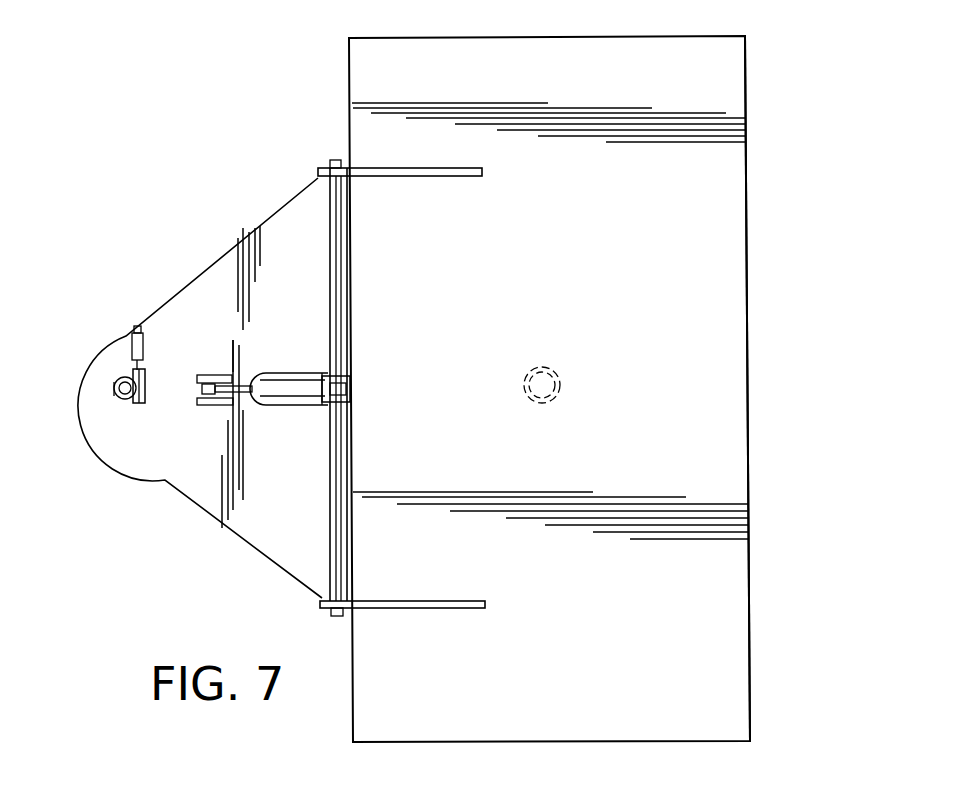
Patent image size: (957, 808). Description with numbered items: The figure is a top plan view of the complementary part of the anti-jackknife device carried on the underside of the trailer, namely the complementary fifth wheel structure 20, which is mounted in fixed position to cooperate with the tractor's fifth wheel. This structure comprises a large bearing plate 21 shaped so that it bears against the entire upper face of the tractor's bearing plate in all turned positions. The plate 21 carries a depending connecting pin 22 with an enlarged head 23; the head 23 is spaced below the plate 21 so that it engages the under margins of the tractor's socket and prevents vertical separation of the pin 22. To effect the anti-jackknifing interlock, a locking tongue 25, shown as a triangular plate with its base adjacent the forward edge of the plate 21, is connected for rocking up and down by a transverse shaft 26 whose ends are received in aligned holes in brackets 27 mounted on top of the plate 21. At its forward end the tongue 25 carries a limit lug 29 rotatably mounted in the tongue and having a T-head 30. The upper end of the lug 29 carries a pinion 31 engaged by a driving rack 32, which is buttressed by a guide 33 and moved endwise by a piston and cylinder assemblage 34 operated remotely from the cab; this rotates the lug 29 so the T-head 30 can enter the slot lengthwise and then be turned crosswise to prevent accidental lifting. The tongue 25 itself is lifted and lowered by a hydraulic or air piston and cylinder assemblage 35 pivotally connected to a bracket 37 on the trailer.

The complementary fifth wheel structure 20 is at (722, 213).
The bearing plate 21 is at (745, 276).
The connecting pin 22 is at (556, 398).
The enlarged head 23 is at (528, 400).
The locking tongue 25 is at (313, 218).
The transverse shaft 26 is at (330, 160).
The brackets 27 is at (460, 176).
The limit lug 29 is at (115, 392).
The T-head 30 is at (113, 384).
The pinion 31 is at (118, 382).
The driving rack 32 is at (132, 392).
The guide 33 is at (138, 404).
The piston and cylinder assemblage 34 is at (118, 333).
The piston and cylinder assemblage 35 is at (286, 372).
The bracket 37 is at (350, 375).